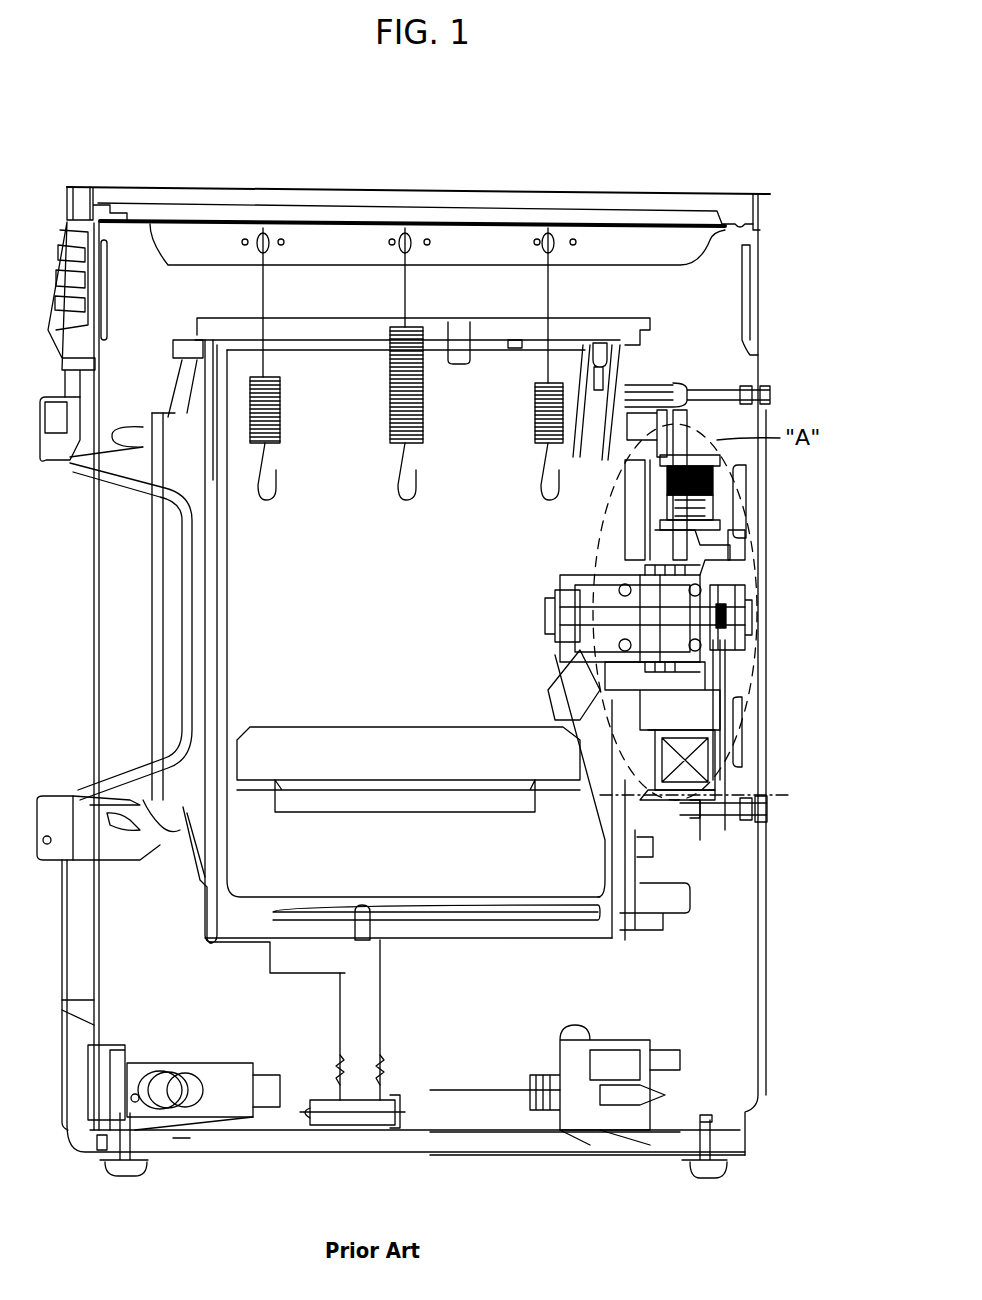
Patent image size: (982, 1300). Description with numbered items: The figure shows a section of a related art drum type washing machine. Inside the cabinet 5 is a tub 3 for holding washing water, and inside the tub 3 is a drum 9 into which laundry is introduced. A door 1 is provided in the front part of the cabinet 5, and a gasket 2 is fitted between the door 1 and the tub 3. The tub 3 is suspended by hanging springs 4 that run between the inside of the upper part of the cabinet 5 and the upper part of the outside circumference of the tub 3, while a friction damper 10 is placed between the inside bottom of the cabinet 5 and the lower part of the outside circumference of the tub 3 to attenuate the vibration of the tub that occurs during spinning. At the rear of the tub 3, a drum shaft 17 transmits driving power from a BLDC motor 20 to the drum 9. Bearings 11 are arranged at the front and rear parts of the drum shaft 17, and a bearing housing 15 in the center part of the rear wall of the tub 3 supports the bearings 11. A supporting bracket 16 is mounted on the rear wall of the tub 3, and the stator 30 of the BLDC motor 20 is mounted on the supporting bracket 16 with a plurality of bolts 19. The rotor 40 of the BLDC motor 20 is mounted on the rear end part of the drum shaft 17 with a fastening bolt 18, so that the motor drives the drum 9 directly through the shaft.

The door 1 is at (140, 478).
The gasket 2 is at (123, 805).
The tub 3 is at (318, 318).
The hanging springs 4 is at (428, 422).
The cabinet 5 is at (752, 342).
The drum 9 is at (503, 880).
The friction damper 10 is at (338, 1010).
The bearings 11 is at (610, 590).
The bearing housing 15 is at (637, 663).
The supporting bracket 16 is at (657, 442).
The drum shaft 17 is at (628, 627).
The fastening bolt 18 is at (747, 613).
The bolts 19 is at (728, 557).
The BLDC motor 20 is at (765, 496).
The stator 30 is at (717, 473).
The rotor 40 is at (745, 517).